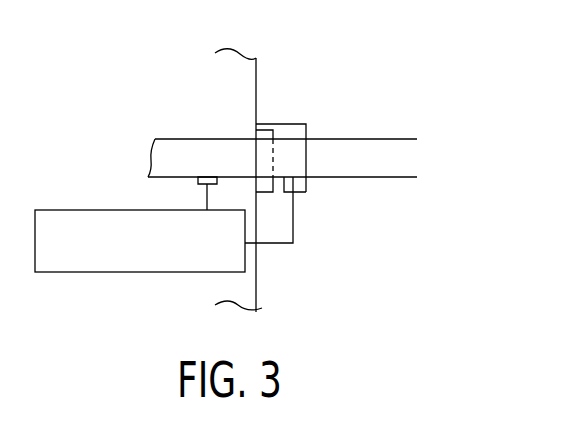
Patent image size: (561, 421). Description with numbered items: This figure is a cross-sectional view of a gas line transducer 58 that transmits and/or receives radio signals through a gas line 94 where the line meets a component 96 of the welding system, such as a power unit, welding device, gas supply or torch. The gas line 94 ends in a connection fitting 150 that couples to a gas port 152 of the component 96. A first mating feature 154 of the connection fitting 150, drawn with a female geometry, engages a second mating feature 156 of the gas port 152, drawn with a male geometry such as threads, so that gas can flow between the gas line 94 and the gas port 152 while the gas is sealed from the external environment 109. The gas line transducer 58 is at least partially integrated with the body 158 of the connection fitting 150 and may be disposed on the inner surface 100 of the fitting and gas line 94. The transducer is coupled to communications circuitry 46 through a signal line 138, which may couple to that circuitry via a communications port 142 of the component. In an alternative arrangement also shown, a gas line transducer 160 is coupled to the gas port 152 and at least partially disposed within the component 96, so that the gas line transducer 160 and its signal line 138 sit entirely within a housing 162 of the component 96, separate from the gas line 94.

The communications circuitry 46 is at (87, 209).
The gas line transducer 58 is at (294, 197).
The gas line 94 is at (404, 138).
The component 96 is at (261, 68).
The inner surface 100 is at (395, 172).
The external environment 109 is at (438, 267).
The signal line 138 is at (203, 186).
The communications port 142 is at (267, 255).
The connection fitting 150 is at (303, 130).
The gas port 152 is at (160, 138).
The first mating feature 154 is at (268, 130).
The second mating feature 156 is at (265, 139).
The body 158 is at (303, 130).
The gas line transducer 160 is at (189, 139).
The housing 162 is at (263, 297).